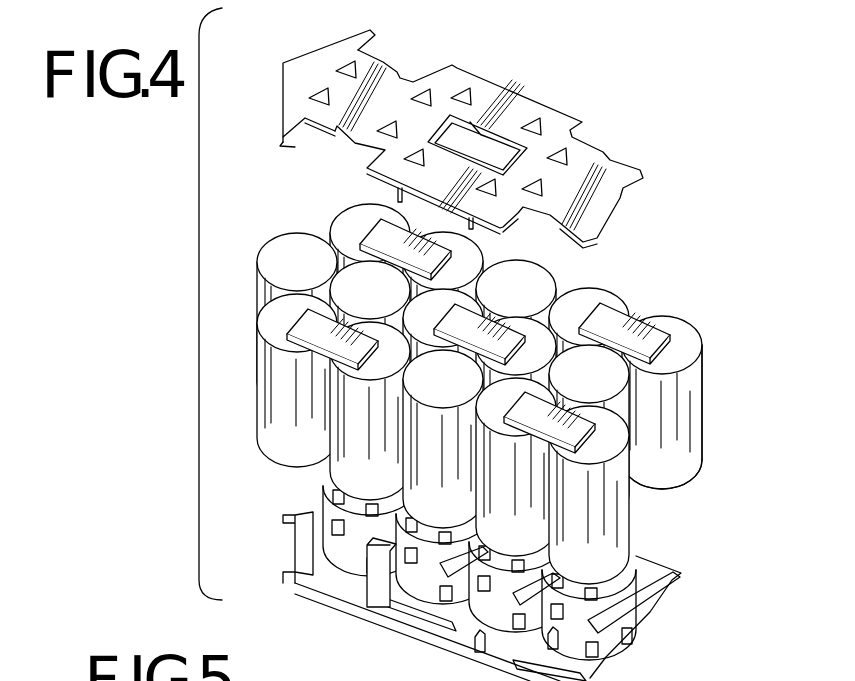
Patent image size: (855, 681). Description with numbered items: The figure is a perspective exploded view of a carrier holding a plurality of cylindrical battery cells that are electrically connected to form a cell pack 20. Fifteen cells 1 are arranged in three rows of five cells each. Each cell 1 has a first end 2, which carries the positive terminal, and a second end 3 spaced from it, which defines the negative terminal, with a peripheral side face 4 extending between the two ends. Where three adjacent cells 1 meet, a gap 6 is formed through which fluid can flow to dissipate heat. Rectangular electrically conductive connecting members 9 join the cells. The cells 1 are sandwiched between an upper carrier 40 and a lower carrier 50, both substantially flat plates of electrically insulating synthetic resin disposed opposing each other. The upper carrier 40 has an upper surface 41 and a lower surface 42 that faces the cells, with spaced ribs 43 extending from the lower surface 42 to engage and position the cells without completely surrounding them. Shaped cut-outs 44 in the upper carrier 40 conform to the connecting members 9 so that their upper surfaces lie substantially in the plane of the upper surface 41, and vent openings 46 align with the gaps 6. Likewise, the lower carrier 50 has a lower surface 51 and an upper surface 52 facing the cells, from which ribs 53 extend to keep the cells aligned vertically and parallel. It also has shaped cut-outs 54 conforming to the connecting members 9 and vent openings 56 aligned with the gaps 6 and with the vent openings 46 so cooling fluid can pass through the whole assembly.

The cell 1 is at (499, 432).
The first end 2 is at (686, 399).
The second end 3 is at (680, 484).
The peripheral side face 4 is at (668, 421).
The gap 6 is at (320, 287).
The electrically conductive connecting member 9 is at (640, 313).
The cell pack 20 is at (479, 432).
The upper carrier 40 is at (458, 124).
The upper surface 41 is at (303, 72).
The lower surface 42 is at (288, 145).
The ribs 43 is at (396, 194).
The shaped cut-outs 44 is at (490, 152).
The vent openings 46 is at (318, 98).
The lower carrier 50 is at (478, 596).
The lower surface 51 is at (303, 605).
The upper surface 52 is at (607, 642).
The ribs 53 is at (330, 513).
The shaped cut-outs 54 is at (307, 542).
The vent openings 56 is at (355, 578).